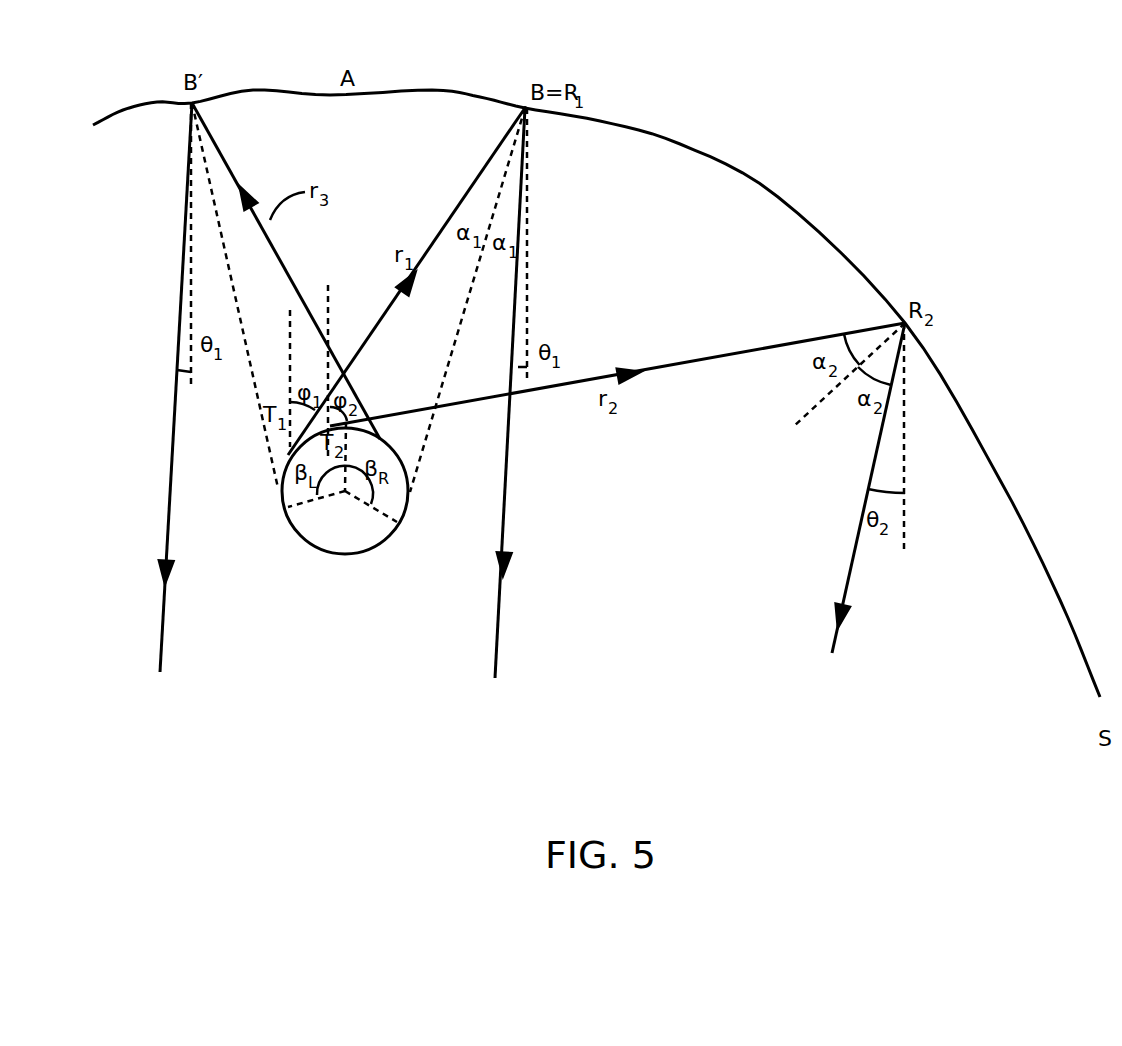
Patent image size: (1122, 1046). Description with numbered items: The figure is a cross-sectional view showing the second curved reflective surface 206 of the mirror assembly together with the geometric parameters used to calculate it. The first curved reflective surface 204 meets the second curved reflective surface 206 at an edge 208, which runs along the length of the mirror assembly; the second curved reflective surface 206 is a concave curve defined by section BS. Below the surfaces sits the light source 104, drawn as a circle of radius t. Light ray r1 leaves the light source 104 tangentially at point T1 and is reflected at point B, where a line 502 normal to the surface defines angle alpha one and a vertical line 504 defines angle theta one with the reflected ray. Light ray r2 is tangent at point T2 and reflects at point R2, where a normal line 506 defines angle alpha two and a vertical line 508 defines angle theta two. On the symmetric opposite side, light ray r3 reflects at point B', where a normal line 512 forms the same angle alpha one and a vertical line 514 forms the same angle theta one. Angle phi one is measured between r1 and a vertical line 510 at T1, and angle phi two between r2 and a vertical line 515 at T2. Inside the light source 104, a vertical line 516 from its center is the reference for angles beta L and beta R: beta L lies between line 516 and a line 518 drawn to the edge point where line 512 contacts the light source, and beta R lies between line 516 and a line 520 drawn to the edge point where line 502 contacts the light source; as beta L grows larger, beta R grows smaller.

The light source 104 is at (343, 555).
The first curved reflective surface 204 is at (432, 90).
The second curved reflective surface 206 is at (778, 197).
The edge 208 is at (523, 100).
The line normal to point B 502 is at (453, 345).
The vertical line at point B 504 is at (528, 297).
The line normal to point R2 506 is at (808, 410).
The vertical line at point R2 508 is at (905, 477).
The vertical line at point T1 510 is at (290, 322).
The line normal to point B' 512 is at (265, 430).
The vertical line at point B' 514 is at (190, 260).
The vertical line at point T2 515 is at (328, 307).
The vertical line from center of light source 516 is at (345, 447).
The line from center of light source to edge contact of line 512 518 is at (312, 502).
The line from center of light source to edge contact of line 502 520 is at (377, 510).